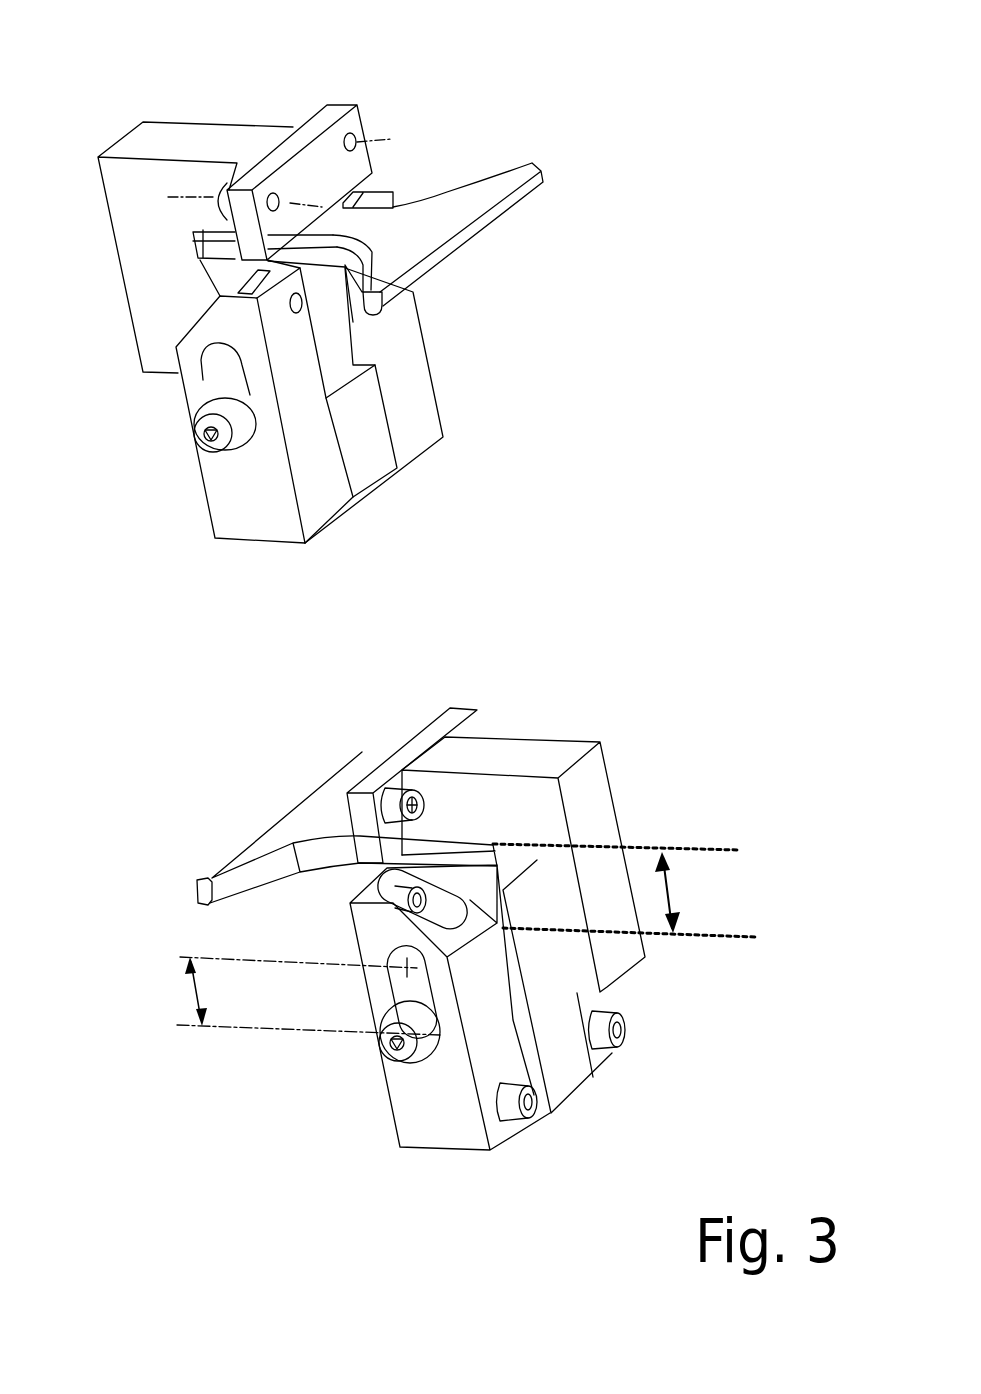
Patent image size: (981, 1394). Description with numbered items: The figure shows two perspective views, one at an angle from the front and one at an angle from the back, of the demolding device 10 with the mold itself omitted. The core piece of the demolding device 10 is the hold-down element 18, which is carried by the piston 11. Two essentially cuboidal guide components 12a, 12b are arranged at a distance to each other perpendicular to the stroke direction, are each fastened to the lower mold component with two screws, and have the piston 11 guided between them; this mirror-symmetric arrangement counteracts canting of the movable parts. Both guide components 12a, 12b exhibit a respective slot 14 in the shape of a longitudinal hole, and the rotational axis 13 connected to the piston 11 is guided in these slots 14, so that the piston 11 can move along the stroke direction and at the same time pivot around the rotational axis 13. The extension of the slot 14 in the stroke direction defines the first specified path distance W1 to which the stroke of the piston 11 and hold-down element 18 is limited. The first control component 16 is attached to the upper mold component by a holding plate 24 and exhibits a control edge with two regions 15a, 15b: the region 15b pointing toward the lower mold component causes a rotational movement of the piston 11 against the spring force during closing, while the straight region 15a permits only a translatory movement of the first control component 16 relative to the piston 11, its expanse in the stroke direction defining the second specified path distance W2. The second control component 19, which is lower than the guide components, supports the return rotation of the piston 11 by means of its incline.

The demolding device 10 is at (412, 111).
The piston 11 is at (207, 275).
The guide component 12a is at (330, 527).
The guide component 12b is at (423, 428).
The rotational axis 13 is at (200, 440).
The slot 14 is at (390, 973).
The region of the control edge 15a is at (503, 890).
The region of the control edge 15b is at (537, 970).
The first control component 16 is at (160, 133).
The hold-down element 18 is at (533, 160).
The second control component 19 is at (370, 473).
The holding plate 24 is at (327, 121).
The first specified path distance W1 is at (185, 988).
The second specified path distance W2 is at (675, 892).